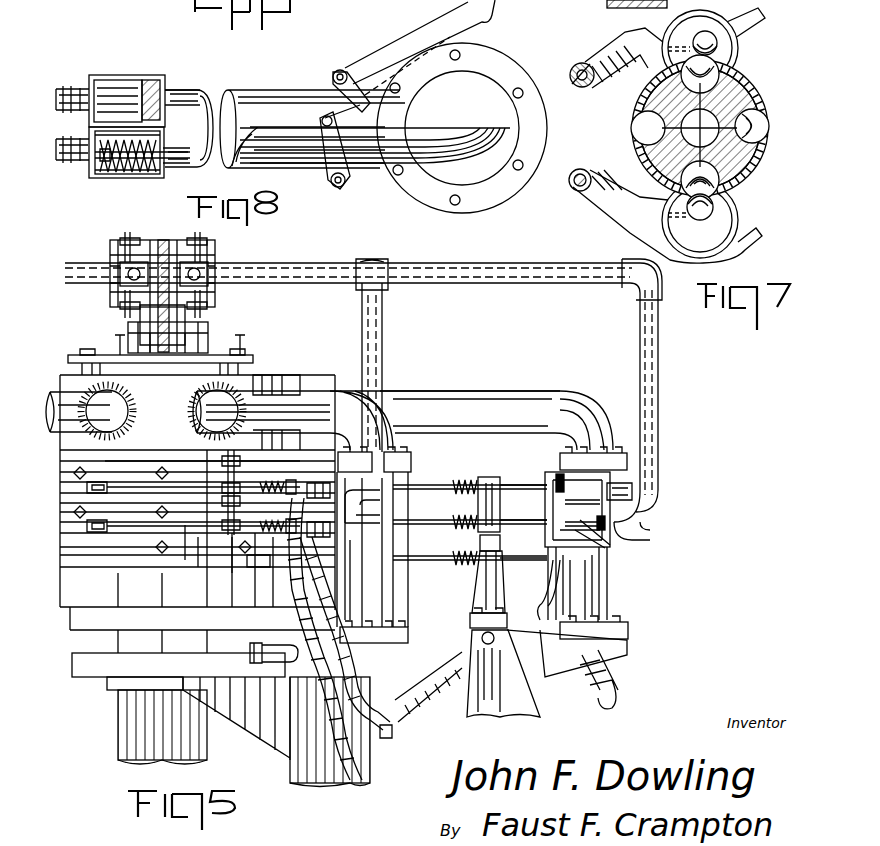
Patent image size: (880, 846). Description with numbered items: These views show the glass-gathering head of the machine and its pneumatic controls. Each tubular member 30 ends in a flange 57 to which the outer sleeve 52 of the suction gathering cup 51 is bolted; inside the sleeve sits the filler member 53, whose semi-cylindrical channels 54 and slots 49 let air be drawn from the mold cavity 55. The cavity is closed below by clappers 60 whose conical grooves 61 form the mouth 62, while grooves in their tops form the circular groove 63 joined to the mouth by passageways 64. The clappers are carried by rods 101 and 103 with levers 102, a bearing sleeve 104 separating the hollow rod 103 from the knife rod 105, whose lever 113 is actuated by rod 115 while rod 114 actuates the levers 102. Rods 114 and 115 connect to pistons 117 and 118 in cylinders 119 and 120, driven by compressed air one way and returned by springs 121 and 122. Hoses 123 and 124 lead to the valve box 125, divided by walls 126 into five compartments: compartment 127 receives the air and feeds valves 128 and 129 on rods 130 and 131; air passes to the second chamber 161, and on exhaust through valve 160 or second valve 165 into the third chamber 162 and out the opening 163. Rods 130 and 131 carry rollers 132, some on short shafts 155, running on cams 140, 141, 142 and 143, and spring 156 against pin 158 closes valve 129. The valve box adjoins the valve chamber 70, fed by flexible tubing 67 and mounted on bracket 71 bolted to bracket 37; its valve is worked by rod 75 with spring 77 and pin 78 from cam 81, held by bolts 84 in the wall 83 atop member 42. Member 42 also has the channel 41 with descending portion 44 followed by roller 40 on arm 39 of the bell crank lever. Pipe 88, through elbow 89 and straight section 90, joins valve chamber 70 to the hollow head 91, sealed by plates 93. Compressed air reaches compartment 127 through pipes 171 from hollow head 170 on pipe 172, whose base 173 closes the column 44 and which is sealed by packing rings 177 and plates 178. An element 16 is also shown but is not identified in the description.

In FIG. 5, the cross head 16 is at (489, 477).
In FIG. 8, the tubular member 30 is at (474, 96).
In FIG. 5, the bracket 37 is at (300, 740).
In FIG. 5, the second arm 39 is at (272, 690).
In FIG. 5, the roller 40 is at (248, 650).
In FIG. 5, the cam groove 41 is at (98, 660).
In FIG. 5, the supporting member 42 is at (130, 680).
In FIG. 5, the column 44 is at (118, 348).
In FIG. 7, the slots 49 is at (665, 146).
In FIG. 7, the suction gathering mold 51 is at (660, 100).
In FIG. 7, the outer sleeve 52 is at (740, 82).
In FIG. 7, the inner filler member 53 is at (732, 150).
In FIG. 7, the semi-cylindrical channels 54 is at (716, 180).
In FIG. 7, the mold cavity 55 is at (705, 128).
In FIG. 8, the flange 57 is at (528, 130).
In FIG. 7, the clappers 60 is at (742, 244).
In FIG. 7, the conical groove 61 is at (716, 210).
In FIG. 7, the mouth 62 is at (660, 98).
In FIG. 7, the circular groove 63 is at (738, 232).
In FIG. 7, the communicating passageways 64 is at (665, 230).
In FIG. 5, the flexible tubing 67 is at (585, 700).
In FIG. 5, the valve chamber 70 is at (392, 608).
In FIG. 5, the bracket 71 is at (590, 650).
In FIG. 5, the rod 75 is at (528, 562).
In FIG. 5, the spring 77 is at (462, 566).
In FIG. 5, the pin 78 is at (480, 545).
In FIG. 5, the cam 81 is at (222, 560).
In FIG. 5, the wall 83 is at (70, 600).
In FIG. 5, the bolts 84 is at (250, 567).
In FIG. 5, the pipe 88 is at (70, 395).
In FIG. 5, the elbow 89 is at (588, 405).
In FIG. 5, the straight section 90 is at (485, 402).
In FIG. 5, the hollow head 91 is at (265, 392).
In FIG. 5, the plates 93 is at (253, 358).
In FIG. 7, the rod 101 is at (573, 188).
In FIG. 8, the levers 102 is at (333, 85).
In FIG. 7, the hollow rod 103 is at (583, 88).
In FIG. 7, the bearing sleeve 104 is at (570, 77).
In FIG. 7, the rod 105 is at (580, 65).
In FIG. 8, the lever 113 is at (348, 70).
In FIG. 8, the rod 114 is at (182, 164).
In FIG. 8, the rod 115 is at (202, 92).
In FIG. 8, the piston 117 is at (105, 178).
In FIG. 8, the piston 118 is at (150, 85).
In FIG. 8, the cylinder 119 is at (128, 178).
In FIG. 8, the cylinder 120 is at (118, 92).
In FIG. 8, the spring 121 is at (150, 178).
In FIG. 8, the spring 122 is at (182, 90).
In FIG. 8, the flexible hose 123 is at (66, 162).
In FIG. 5, the flexible hose 123 is at (385, 733).
In FIG. 8, the flexible hose 124 is at (66, 88).
In FIG. 5, the flexible hose 124 is at (362, 780).
In FIG. 5, the valve box 125 is at (365, 540).
In FIG. 5, the division walls 126 is at (572, 458).
In FIG. 5, the compartment 127 is at (623, 491).
In FIG. 5, the valve 128 is at (630, 462).
In FIG. 5, the valve 129 is at (606, 522).
In FIG. 5, the rod 130 is at (545, 486).
In FIG. 5, the rod 131 is at (522, 496).
In FIG. 5, the rollers 132 is at (194, 413).
In FIG. 5, the cam 140 is at (187, 528).
In FIG. 5, the cam 141 is at (178, 502).
In FIG. 5, the cam 142 is at (160, 488).
In FIG. 5, the cam 143 is at (135, 462).
In FIG. 5, the short shafts 155 is at (226, 456).
In FIG. 5, the spring 156 is at (455, 490).
In FIG. 5, the pin 158 is at (455, 526).
In FIG. 5, the valve 160 is at (585, 527).
In FIG. 5, the second chamber 161 is at (563, 545).
In FIG. 5, the third chamber 162 is at (560, 512).
In FIG. 5, the air opening 163 is at (555, 536).
In FIG. 5, the second valve 165 is at (558, 476).
In FIG. 5, the hollow head 170 is at (215, 288).
In FIG. 5, the pipes 171 is at (95, 275).
In FIG. 5, the pipe 172 is at (150, 300).
In FIG. 5, the base part 173 is at (200, 330).
In FIG. 5, the packing rings 177 is at (118, 246).
In FIG. 5, the plates 178 is at (208, 245).